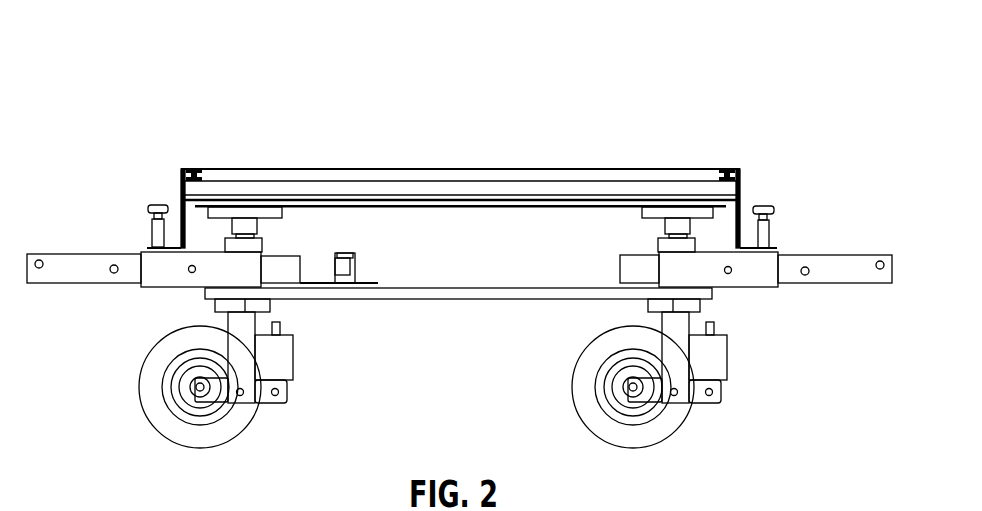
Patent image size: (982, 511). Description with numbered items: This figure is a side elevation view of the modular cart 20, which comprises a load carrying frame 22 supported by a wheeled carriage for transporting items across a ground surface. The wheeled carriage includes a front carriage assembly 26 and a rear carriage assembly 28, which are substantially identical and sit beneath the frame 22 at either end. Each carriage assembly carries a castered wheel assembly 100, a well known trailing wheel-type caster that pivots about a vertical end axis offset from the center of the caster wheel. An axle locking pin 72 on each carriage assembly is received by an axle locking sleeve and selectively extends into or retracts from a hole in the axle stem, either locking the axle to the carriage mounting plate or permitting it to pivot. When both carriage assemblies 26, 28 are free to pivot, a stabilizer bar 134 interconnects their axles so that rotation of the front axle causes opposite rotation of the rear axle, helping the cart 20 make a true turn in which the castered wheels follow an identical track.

The modular cart 20 is at (141, 81).
The load carrying frame 22 is at (462, 182).
The axle locking pin 72 is at (468, 200).
The rear carriage assembly 28 is at (152, 299).
The front carriage assembly 26 is at (769, 301).
The stabilizer bar 134 is at (458, 321).
The castered wheel assembly 100 is at (309, 388).